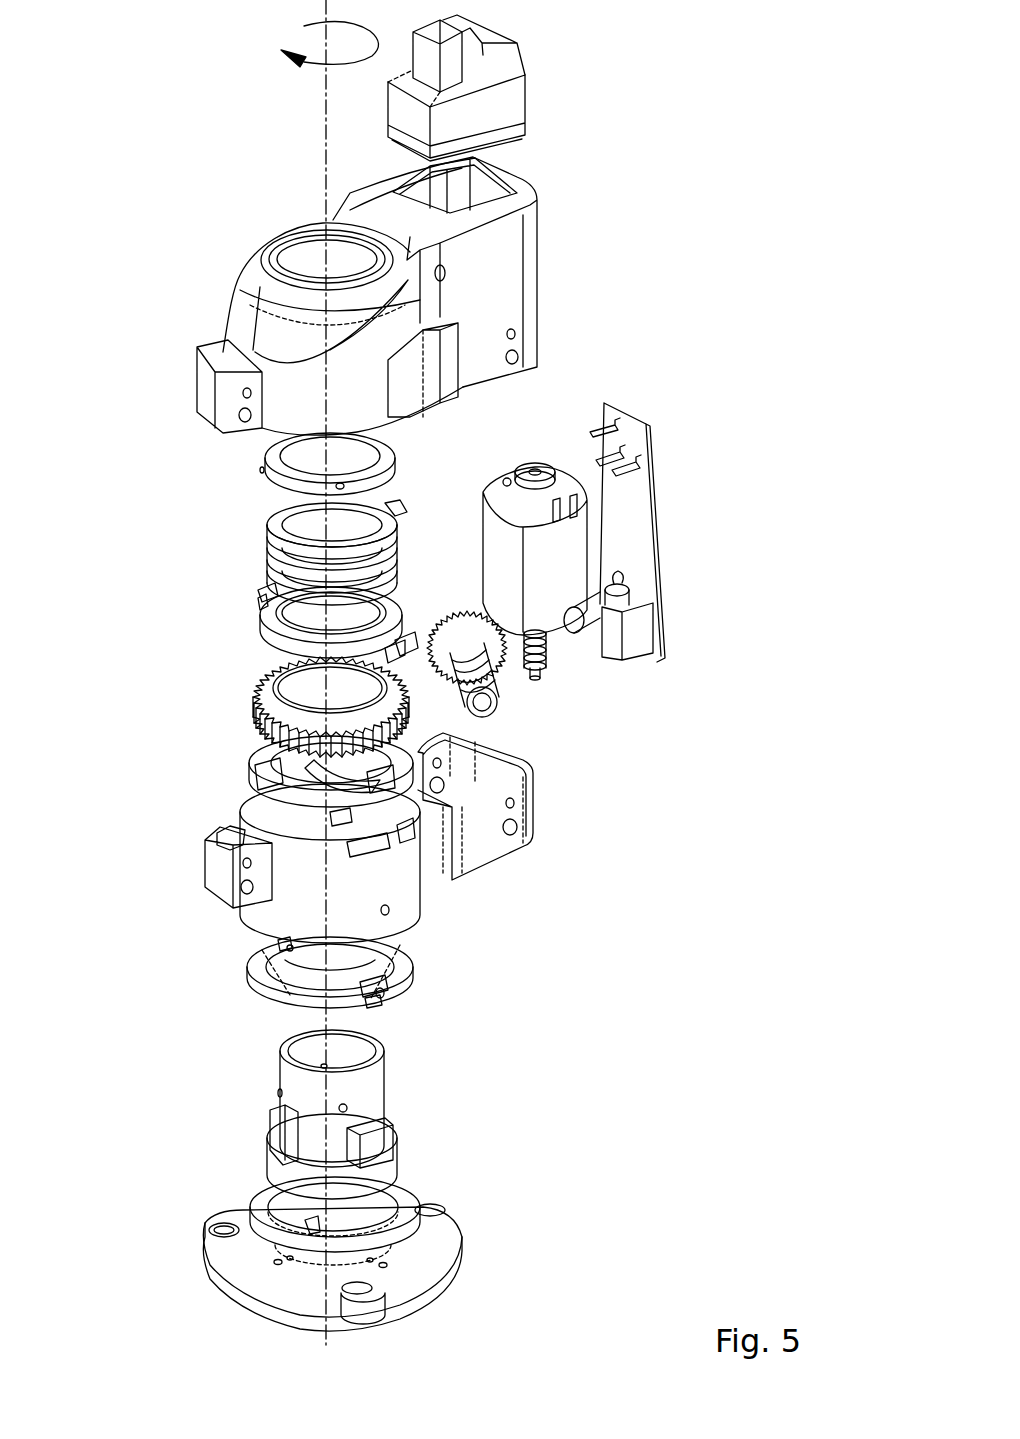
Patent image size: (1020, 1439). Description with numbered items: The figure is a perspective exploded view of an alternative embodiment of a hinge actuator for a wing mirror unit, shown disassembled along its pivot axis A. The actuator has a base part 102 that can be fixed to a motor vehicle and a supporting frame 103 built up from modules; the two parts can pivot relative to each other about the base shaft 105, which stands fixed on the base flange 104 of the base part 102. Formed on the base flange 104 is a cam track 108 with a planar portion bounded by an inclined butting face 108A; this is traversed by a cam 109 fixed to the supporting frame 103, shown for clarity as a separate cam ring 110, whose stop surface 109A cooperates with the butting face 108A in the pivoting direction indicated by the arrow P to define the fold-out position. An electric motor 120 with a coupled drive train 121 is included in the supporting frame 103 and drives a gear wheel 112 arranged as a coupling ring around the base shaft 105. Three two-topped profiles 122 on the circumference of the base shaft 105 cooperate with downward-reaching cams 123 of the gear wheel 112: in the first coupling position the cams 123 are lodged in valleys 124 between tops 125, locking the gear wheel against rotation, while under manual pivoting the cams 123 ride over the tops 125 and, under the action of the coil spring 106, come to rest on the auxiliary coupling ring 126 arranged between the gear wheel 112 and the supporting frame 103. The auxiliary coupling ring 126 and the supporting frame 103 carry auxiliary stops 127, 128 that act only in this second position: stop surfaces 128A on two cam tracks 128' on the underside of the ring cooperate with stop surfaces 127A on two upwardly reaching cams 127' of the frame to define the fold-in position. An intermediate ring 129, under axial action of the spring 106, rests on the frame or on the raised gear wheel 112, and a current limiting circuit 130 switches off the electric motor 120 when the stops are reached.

The axis of rotation A is at (325, 90).
The pivoting direction arrow P is at (359, 25).
The base part 102 is at (352, 1239).
The supporting frame 103 is at (545, 240).
The base flange 104 is at (263, 1270).
The base shaft 105 is at (280, 1075).
The coil spring 106 is at (265, 548).
The cam track 108 is at (400, 1223).
The butting face 108A is at (343, 1212).
The cam 109 is at (285, 995).
The stop surface 109A is at (347, 960).
The cam ring 110 is at (370, 1003).
The gear wheel 112 is at (255, 702).
The electric motor 120 is at (485, 518).
The drive train 121 is at (398, 675).
The two-topped profiles 122 is at (245, 1130).
The cams 123 is at (265, 738).
The valleys 124 is at (385, 1140).
The tops 125 is at (385, 1112).
The auxiliary coupling ring 126 is at (387, 810).
The auxiliary stops 127 is at (382, 965).
The cams 127' is at (338, 953).
The stop surfaces 127A is at (263, 953).
The auxiliary stops 128 is at (479, 878).
The cam tracks 128' is at (492, 831).
The stop surfaces 128A is at (343, 817).
The intermediate ring 129 is at (262, 630).
The current limiting circuit 130 is at (636, 638).